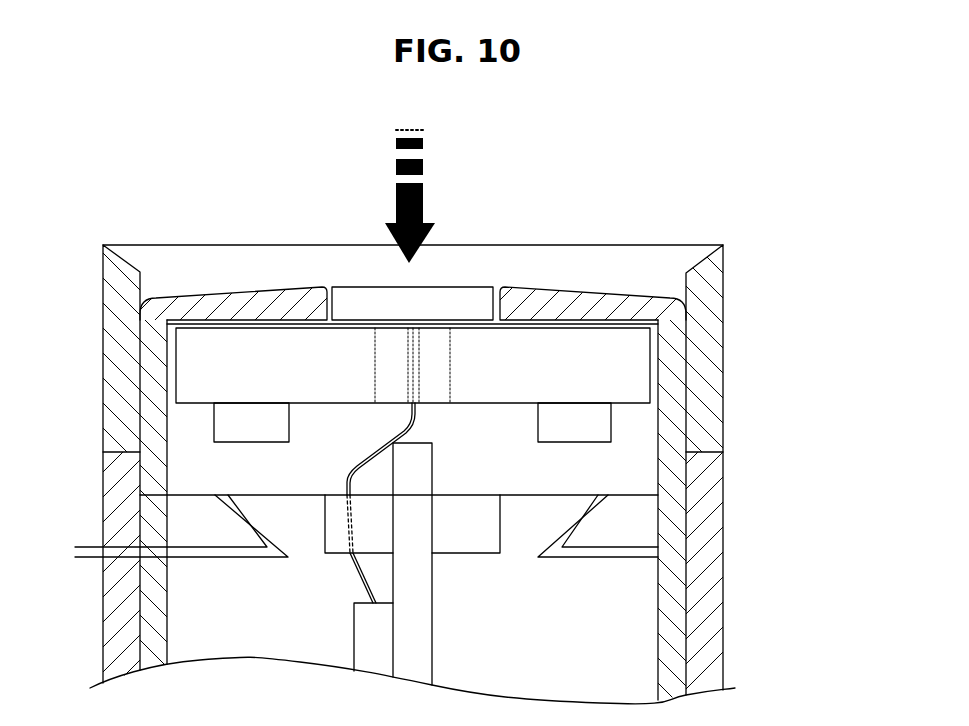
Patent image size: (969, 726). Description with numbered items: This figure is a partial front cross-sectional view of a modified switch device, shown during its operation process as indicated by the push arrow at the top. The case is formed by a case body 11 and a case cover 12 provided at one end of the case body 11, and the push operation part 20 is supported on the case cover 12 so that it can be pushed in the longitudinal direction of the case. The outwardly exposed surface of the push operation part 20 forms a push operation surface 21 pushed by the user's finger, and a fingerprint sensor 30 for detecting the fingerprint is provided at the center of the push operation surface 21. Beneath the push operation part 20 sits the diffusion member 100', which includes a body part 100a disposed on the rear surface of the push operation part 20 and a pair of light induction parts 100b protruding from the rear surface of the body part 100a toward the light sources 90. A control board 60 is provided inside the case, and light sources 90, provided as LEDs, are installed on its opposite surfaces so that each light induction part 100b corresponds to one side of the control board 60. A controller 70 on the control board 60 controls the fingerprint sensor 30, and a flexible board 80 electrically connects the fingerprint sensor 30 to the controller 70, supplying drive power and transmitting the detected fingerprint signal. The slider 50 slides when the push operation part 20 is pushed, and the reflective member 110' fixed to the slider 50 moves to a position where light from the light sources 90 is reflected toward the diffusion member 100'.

The case body 11 is at (723, 638).
The case cover 12 is at (723, 284).
The push operation part 20 is at (413, 254).
The push operation surface 21 is at (590, 290).
The fingerprint sensor 30 is at (458, 292).
The slider 50 is at (675, 590).
The control board 60 is at (432, 655).
The controller 70 is at (363, 647).
The flexible board 80 is at (408, 432).
The light source 90 is at (335, 553).
The diffusion member 100' is at (448, 389).
The body part 100a is at (630, 363).
The light induction part 100b is at (613, 425).
The reflective member 110' is at (412, 526).